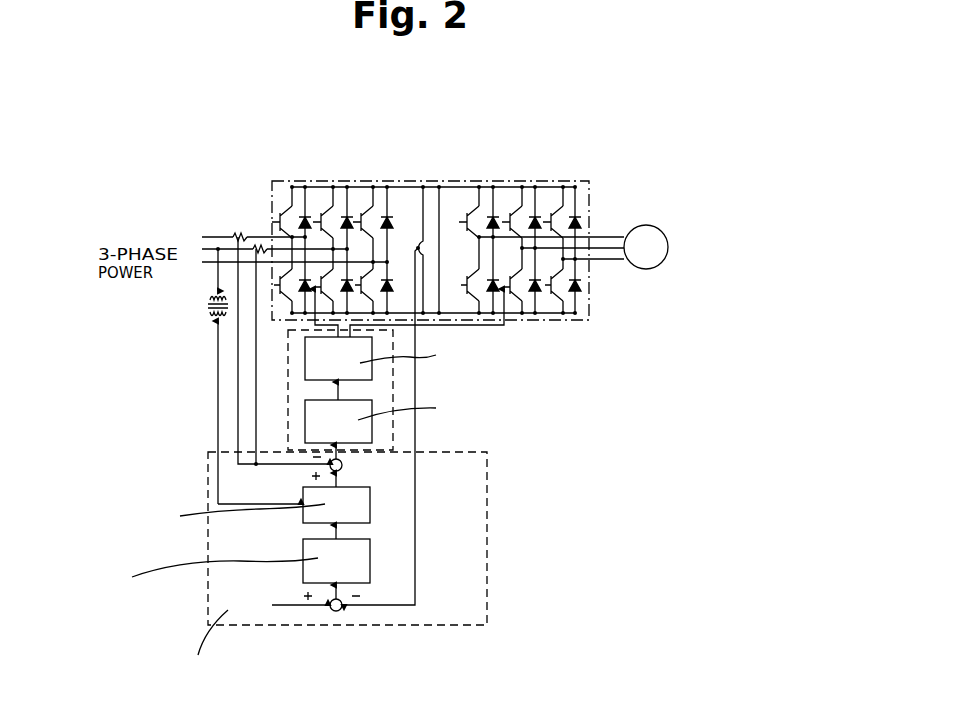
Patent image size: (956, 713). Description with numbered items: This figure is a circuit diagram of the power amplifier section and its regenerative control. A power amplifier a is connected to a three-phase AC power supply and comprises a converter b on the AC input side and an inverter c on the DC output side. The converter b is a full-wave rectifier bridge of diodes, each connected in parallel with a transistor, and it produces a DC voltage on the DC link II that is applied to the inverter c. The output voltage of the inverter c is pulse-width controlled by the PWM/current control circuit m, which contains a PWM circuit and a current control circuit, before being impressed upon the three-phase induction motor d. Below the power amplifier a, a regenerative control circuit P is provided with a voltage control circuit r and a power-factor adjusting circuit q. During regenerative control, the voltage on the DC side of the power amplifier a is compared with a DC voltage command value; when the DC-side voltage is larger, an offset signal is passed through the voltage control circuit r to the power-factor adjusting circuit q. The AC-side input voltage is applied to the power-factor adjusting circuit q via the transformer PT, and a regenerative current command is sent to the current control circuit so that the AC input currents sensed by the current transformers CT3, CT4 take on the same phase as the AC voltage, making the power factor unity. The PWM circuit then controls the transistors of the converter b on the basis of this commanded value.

The power amplifier a is at (585, 189).
The converter b is at (338, 181).
The inverter c is at (518, 181).
The three-phase induction motor d is at (668, 247).
The DC link II is at (428, 250).
The PWM/current control circuit m is at (296, 366).
The regenerative control circuit P is at (441, 469).
The power-factor adjusting circuit q is at (370, 500).
The voltage control circuit r is at (370, 552).
The current transformer CT3 is at (271, 340).
The current transformer CT4 is at (261, 341).
The potential transformer PT is at (240, 375).